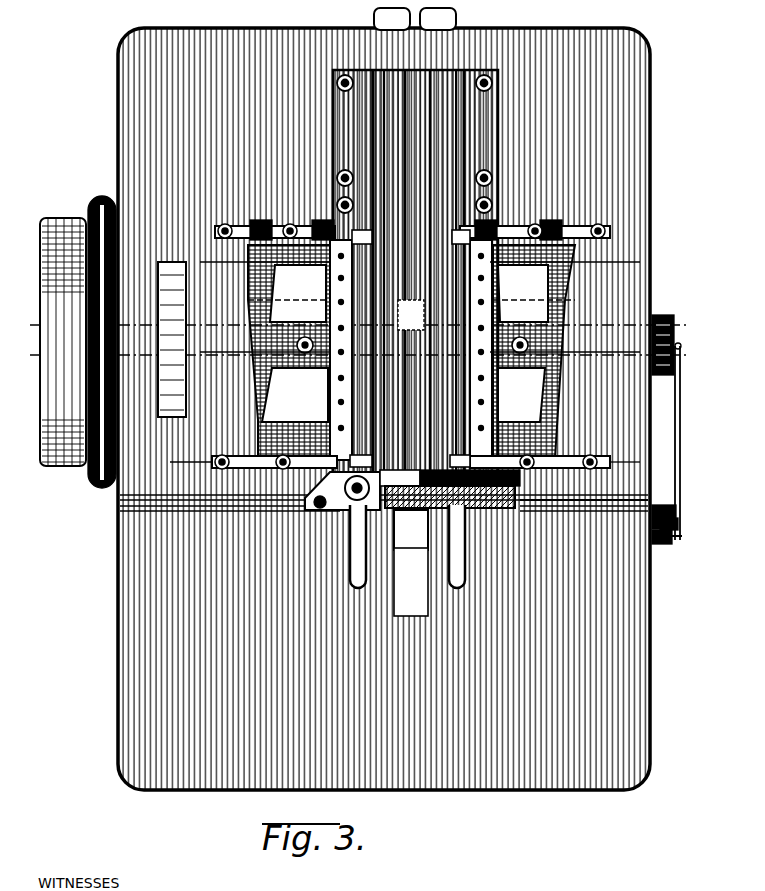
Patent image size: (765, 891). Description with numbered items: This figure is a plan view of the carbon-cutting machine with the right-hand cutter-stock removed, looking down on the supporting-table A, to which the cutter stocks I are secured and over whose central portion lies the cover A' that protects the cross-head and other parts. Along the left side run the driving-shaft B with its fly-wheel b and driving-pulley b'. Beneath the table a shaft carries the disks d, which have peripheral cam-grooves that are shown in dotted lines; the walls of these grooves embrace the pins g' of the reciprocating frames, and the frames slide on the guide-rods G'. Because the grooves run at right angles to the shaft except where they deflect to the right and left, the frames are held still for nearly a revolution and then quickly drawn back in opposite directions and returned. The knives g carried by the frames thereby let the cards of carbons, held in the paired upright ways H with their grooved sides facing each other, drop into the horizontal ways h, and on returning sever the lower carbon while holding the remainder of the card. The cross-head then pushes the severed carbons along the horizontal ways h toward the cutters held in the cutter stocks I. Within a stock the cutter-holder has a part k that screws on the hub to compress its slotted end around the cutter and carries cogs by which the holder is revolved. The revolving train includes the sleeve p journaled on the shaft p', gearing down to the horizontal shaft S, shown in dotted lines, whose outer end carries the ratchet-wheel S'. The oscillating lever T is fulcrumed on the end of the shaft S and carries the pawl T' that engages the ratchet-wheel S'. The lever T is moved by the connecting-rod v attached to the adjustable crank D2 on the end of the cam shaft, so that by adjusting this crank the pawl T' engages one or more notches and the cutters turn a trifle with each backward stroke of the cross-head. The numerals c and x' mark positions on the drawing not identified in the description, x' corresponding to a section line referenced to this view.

The supporting-table A is at (384, 409).
The cover A' is at (415, 276).
The driving-shaft B is at (168, 356).
The fly-wheel b is at (102, 332).
The driving-pulley b' is at (63, 329).
The side frame c is at (406, 351).
The cam disks d is at (318, 300).
The screw part of cutter-holder k is at (341, 350).
The horizontal ways h is at (481, 350).
The knives g is at (412, 323).
The pins g' is at (420, 311).
The guide-rods G' is at (418, 347).
The upright ways H is at (358, 228).
The pin x' is at (405, 463).
The cutter stocks I is at (325, 512).
The sleeve p is at (415, 563).
The shaft p' is at (411, 361).
The horizontal shaft S is at (584, 535).
The ratchet-wheel S' is at (669, 550).
The oscillating lever T is at (685, 519).
The pawl T' is at (675, 505).
The connecting-rod v is at (685, 443).
The adjustable crank D2 is at (676, 344).